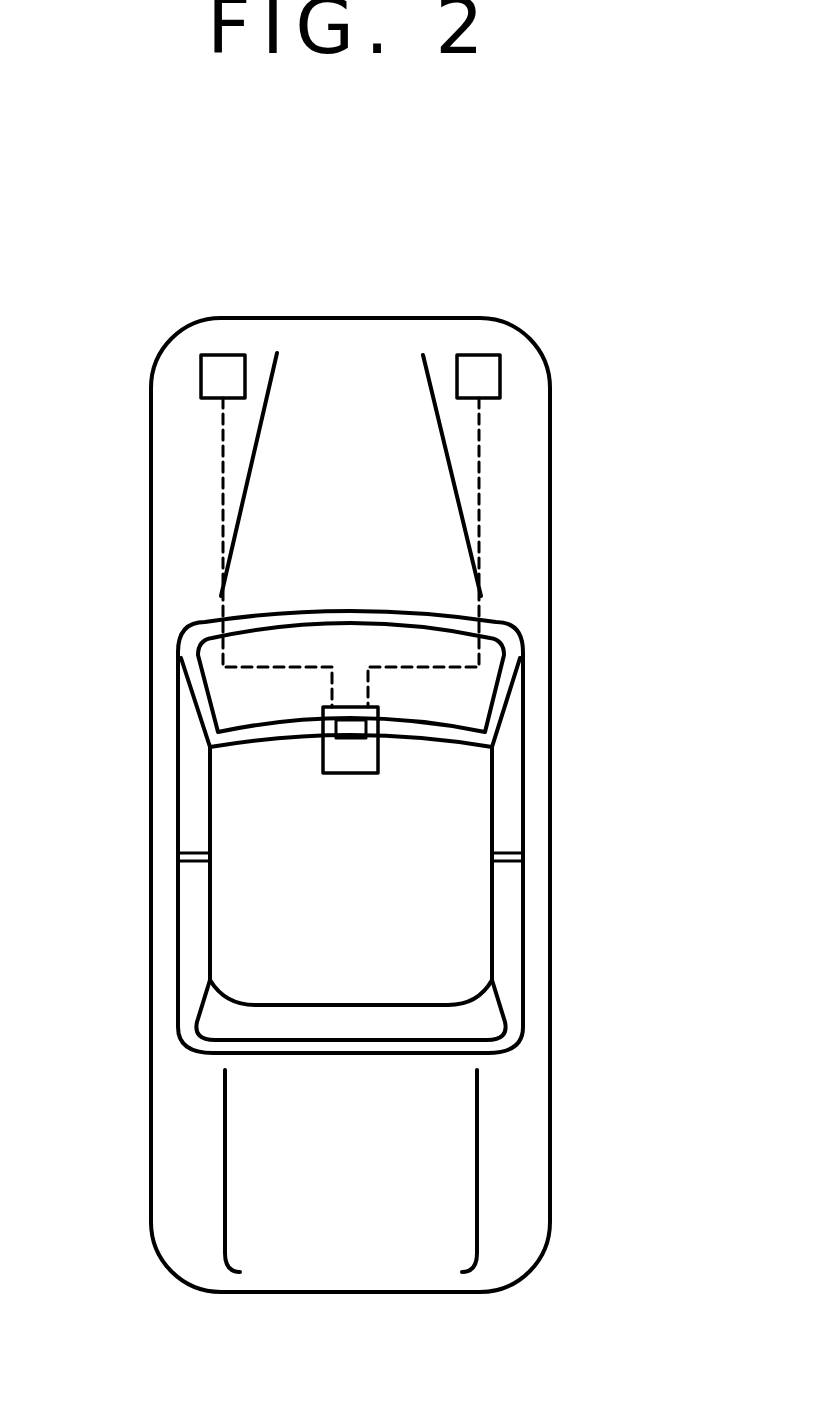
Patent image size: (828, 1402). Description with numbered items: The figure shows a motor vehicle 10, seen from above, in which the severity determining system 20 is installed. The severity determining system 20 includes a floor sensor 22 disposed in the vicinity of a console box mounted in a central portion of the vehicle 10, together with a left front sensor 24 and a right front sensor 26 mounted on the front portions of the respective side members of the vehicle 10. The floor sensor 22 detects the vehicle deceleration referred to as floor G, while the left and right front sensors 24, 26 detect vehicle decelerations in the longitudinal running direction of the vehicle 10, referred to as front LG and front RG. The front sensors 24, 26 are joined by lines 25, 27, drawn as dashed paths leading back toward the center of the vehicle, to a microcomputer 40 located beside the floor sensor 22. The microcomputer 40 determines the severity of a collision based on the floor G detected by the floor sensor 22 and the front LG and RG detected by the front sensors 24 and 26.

The motor vehicle 10 is at (528, 1102).
The severity determining system 20 is at (572, 805).
The floor sensor 22 is at (352, 730).
The left front sensor 24 is at (225, 380).
The left camera signal line 25 is at (222, 533).
The right front sensor 26 is at (478, 365).
The right camera signal line 27 is at (479, 530).
The microcomputer 40 is at (333, 753).